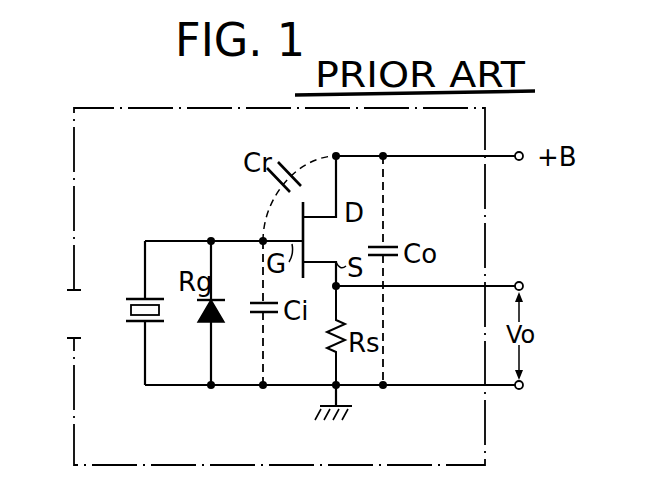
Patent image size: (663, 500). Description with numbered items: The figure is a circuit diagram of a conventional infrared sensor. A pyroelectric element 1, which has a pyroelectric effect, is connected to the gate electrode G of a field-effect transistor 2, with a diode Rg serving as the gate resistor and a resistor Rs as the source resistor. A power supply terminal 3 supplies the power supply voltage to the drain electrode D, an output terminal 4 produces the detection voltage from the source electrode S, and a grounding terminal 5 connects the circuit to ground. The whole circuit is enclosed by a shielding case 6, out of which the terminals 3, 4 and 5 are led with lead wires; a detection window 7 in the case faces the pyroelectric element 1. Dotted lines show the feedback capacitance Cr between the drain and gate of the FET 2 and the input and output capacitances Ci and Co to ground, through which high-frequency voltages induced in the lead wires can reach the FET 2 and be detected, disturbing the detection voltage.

The pyroelectric element 1 is at (128, 310).
The field-effect transistor 2 is at (302, 229).
The power supply terminal 3 is at (523, 151).
The output terminal 4 is at (523, 288).
The grounding terminal 5 is at (523, 388).
The shielding case 6 is at (486, 196).
The detection window 7 is at (74, 322).